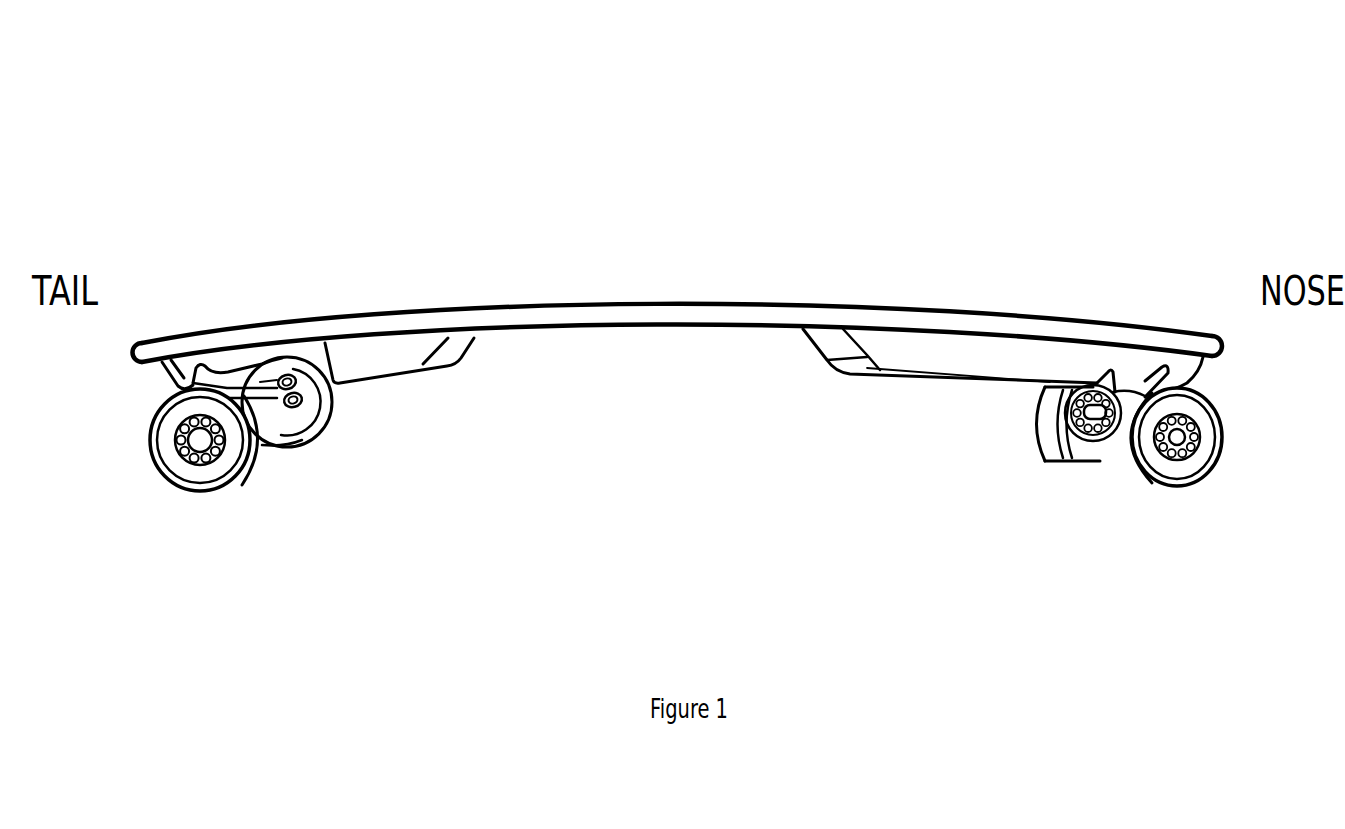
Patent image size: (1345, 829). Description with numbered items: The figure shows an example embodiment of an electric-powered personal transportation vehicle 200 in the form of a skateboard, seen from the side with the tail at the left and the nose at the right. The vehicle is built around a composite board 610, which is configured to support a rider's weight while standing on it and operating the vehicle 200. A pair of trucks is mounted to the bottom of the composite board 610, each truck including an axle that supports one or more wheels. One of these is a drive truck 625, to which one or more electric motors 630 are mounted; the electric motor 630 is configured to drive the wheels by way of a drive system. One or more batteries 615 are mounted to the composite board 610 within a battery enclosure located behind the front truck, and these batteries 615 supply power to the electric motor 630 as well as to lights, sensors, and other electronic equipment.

The electric-powered personal transportation vehicle 200 is at (927, 227).
The composite board 610 is at (683, 316).
The battery 615 is at (826, 413).
The drive truck 625 is at (167, 379).
The electric motor 630 is at (297, 408).